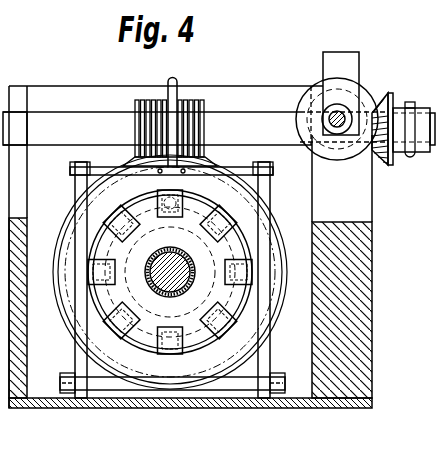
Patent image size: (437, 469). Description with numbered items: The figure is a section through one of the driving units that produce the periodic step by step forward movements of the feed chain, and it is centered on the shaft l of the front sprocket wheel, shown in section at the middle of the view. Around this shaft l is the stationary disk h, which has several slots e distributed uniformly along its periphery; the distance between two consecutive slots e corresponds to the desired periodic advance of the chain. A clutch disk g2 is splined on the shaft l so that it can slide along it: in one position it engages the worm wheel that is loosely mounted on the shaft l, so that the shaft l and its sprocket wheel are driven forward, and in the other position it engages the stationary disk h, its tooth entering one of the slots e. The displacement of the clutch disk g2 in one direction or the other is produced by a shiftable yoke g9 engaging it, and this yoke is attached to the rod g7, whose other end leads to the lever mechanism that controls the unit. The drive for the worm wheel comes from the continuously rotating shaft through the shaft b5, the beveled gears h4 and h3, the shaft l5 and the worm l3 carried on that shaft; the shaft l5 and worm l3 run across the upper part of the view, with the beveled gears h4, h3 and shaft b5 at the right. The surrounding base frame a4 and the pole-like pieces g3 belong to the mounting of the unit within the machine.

The shaft l5 is at (38, 123).
The rod g7 is at (179, 88).
The worm l3 is at (203, 125).
The beveled gear h4 is at (322, 93).
The shaft b5 is at (347, 112).
The beveled gear h3 is at (392, 97).
The pole piece g3 is at (143, 210).
The slots e is at (121, 212).
The clutch disk g2 is at (88, 297).
The shiftable yoke g9 is at (78, 347).
The shaft l is at (182, 293).
The base frame a4 is at (98, 382).
The stationary disk h is at (152, 310).